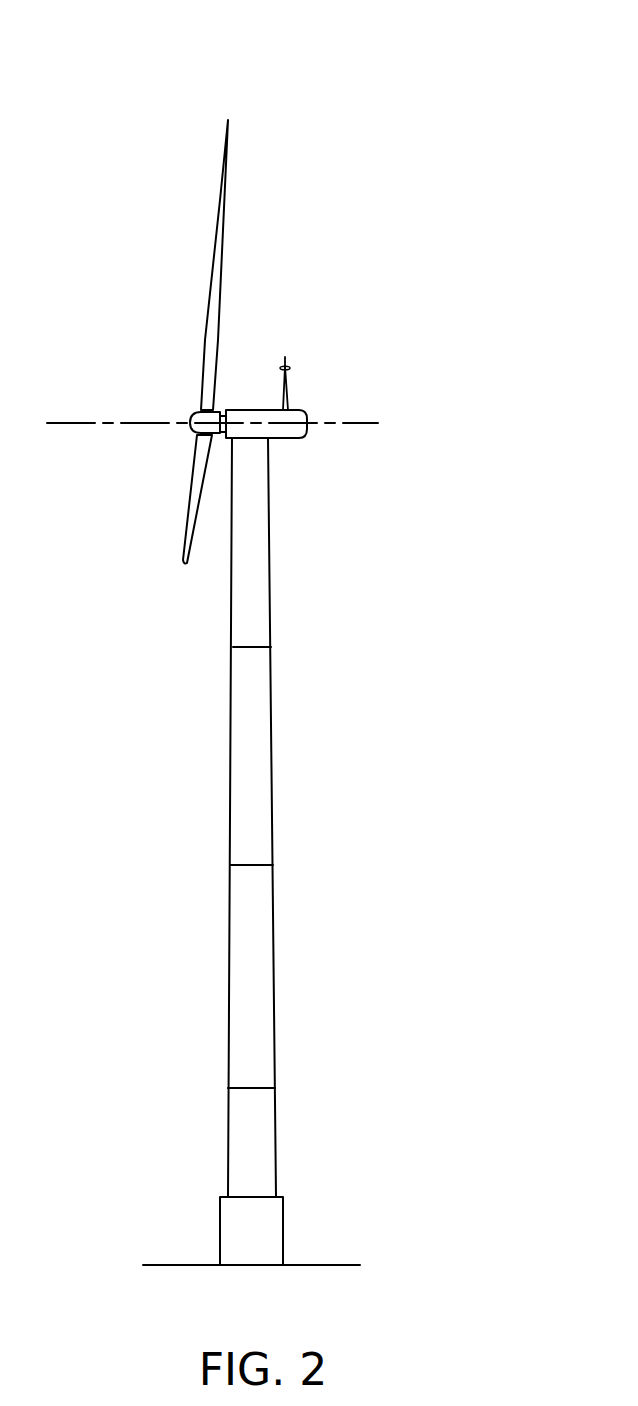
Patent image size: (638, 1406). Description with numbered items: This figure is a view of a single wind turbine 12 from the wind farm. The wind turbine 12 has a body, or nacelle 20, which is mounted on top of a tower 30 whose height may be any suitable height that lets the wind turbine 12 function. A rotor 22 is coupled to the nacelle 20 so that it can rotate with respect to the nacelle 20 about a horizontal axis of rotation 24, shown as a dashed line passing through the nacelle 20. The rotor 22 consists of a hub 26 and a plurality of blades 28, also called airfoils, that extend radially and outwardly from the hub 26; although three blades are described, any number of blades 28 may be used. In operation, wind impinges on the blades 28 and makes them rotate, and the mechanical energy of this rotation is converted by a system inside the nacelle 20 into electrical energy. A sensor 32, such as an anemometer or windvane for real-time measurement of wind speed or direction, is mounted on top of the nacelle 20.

The wind turbine 12 is at (480, 78).
The nacelle 20 is at (288, 436).
The rotor 22 is at (183, 522).
The axis of rotation 24 is at (68, 422).
The hub 26 is at (190, 420).
The blades 28 is at (215, 311).
The tower 30 is at (272, 793).
The sensors 32 is at (293, 387).